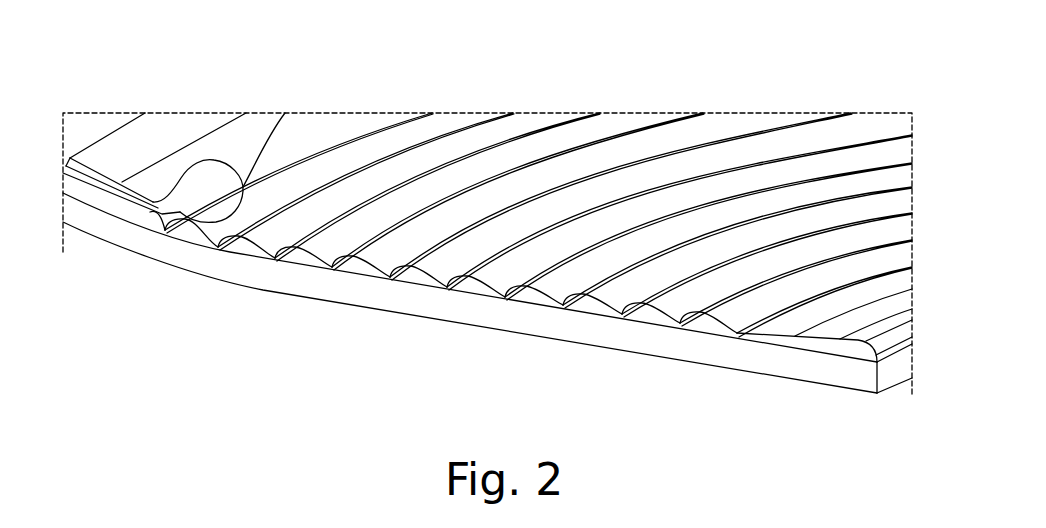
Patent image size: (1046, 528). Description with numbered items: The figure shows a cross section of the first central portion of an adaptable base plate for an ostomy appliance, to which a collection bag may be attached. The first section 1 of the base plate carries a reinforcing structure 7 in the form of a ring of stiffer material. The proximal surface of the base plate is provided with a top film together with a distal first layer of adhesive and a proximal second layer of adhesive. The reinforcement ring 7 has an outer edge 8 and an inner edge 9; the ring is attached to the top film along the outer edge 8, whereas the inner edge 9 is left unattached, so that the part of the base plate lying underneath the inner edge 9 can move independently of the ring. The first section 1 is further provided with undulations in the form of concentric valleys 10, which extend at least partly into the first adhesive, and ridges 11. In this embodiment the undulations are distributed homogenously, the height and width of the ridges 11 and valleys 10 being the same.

The first section 1 is at (557, 330).
The reinforcing structure 7 is at (181, 180).
The outer edge 8 is at (107, 137).
The inner edge 9 is at (246, 200).
The valleys 10 is at (448, 292).
The ridges 11 is at (712, 333).